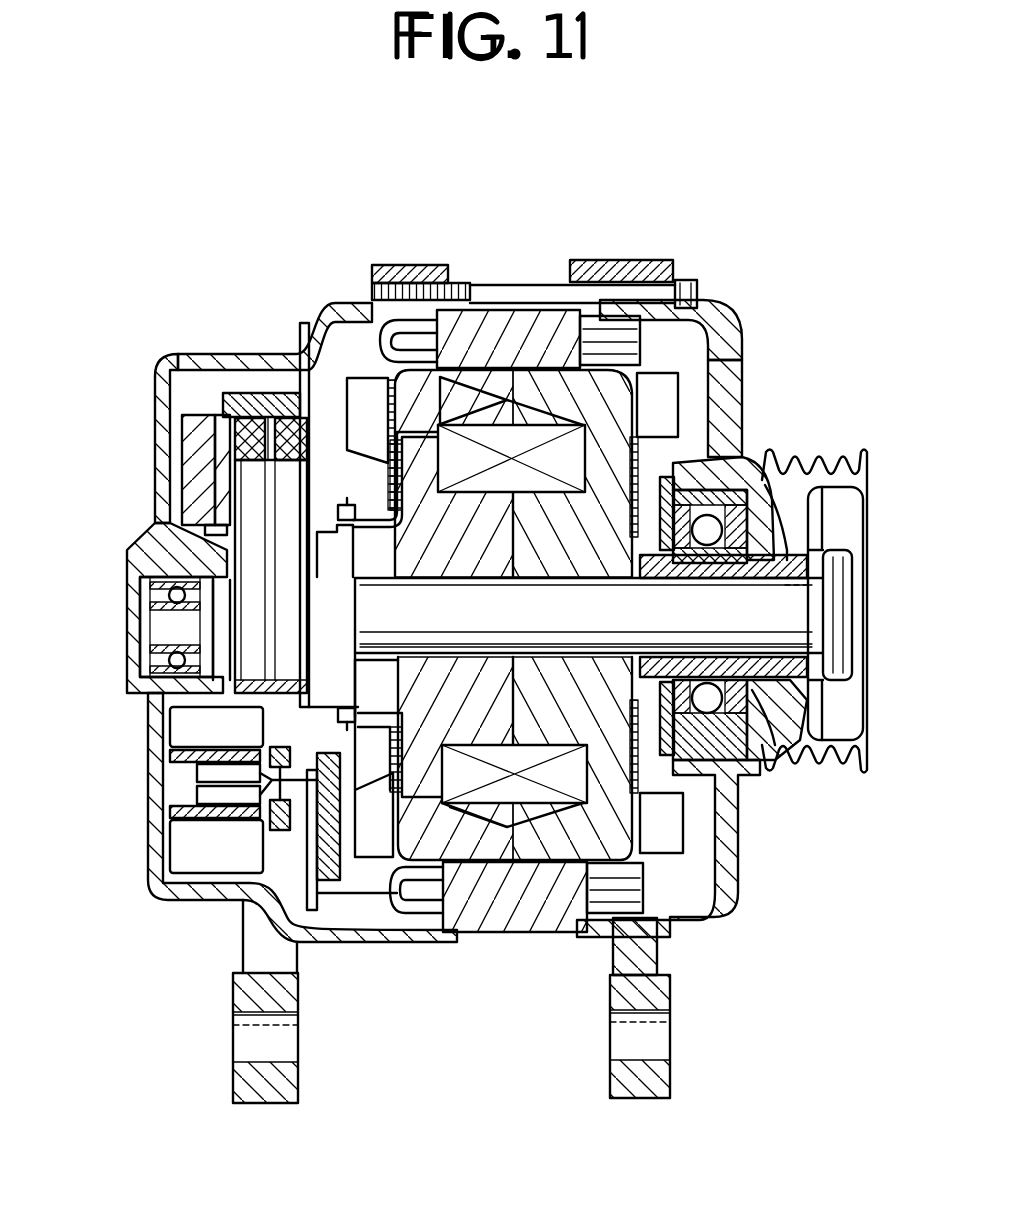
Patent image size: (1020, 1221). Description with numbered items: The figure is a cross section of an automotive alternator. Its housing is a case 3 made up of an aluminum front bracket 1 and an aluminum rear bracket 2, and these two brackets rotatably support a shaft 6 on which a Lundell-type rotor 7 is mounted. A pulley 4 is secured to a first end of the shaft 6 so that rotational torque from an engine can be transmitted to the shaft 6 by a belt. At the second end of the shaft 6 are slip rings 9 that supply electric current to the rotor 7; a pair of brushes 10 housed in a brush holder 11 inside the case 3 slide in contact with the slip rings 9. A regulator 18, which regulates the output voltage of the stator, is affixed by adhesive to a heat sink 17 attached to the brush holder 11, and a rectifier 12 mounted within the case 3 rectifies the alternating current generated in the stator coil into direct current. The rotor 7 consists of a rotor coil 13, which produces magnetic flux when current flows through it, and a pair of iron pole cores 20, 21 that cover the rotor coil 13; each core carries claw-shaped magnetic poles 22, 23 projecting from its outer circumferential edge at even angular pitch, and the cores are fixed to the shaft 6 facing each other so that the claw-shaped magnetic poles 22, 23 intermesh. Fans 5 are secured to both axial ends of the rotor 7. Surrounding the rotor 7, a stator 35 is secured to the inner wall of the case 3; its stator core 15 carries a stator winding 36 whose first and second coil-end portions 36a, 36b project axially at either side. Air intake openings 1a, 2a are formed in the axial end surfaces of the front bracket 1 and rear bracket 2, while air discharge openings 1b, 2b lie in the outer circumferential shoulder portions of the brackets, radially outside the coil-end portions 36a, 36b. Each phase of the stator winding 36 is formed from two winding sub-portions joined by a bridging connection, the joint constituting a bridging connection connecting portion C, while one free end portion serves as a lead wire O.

The front bracket 1 is at (746, 352).
The air intake opening 1a is at (725, 435).
The air discharge opening 1b is at (718, 318).
The rear bracket 2 is at (178, 352).
The air intake opening 2a is at (165, 490).
The air discharge opening 2b is at (318, 320).
The case 3 is at (690, 947).
The pulley 4 is at (827, 767).
The fans 5 is at (667, 412).
The shaft 6 is at (790, 612).
The rotor 7 is at (440, 1025).
The slip rings 9 is at (300, 613).
The brushes 10 is at (297, 510).
The brush holder 11 is at (255, 395).
The rectifier 12 is at (160, 852).
The rotor coil 13 is at (517, 790).
The stator core 15 is at (547, 318).
The heat sink 17 is at (222, 412).
The regulator 18 is at (222, 437).
The pole core 20 is at (453, 830).
The pole core 21 is at (567, 840).
The claw-shaped magnetic poles 22 is at (412, 400).
The claw-shaped magnetic poles 23 is at (655, 383).
The stator 35 is at (455, 195).
The stator winding 36 is at (452, 266).
The first coil-end portion 36a is at (617, 330).
The second coil-end portion 36b is at (415, 332).
The lead wire O is at (352, 900).
The bridging connection connecting portion C is at (413, 908).